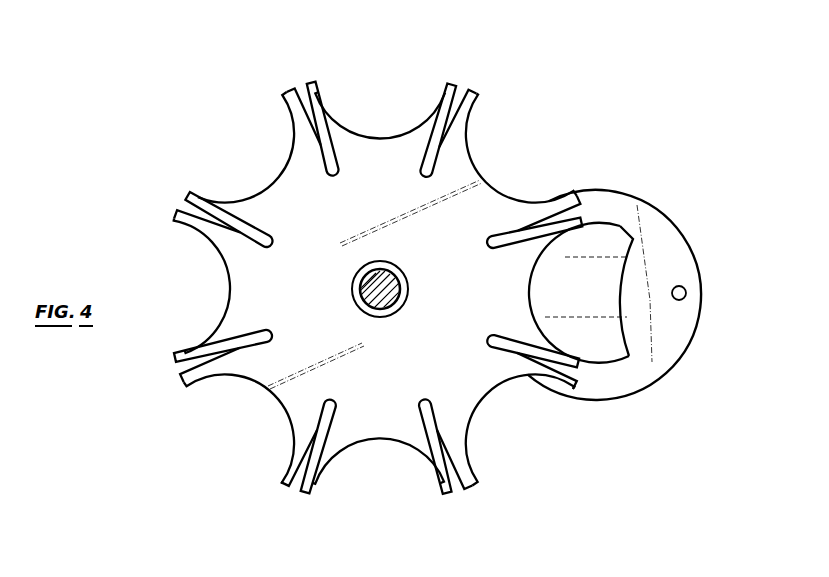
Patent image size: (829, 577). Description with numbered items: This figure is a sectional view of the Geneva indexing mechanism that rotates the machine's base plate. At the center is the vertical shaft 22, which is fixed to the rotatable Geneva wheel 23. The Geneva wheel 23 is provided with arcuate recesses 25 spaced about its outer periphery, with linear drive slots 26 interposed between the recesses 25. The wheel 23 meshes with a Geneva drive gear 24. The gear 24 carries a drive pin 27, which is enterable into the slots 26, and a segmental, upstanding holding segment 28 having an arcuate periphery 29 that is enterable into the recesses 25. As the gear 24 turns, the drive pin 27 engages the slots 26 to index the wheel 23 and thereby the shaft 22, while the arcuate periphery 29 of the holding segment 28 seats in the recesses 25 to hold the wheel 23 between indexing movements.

The vertical shaft 22 is at (372, 282).
The Geneva wheel 23 is at (459, 300).
The Geneva drive gear 24 is at (675, 246).
The arcuate recesses 25 is at (266, 388).
The linear drive slots 26 is at (580, 207).
The drive pin 27 is at (687, 294).
The holding segment 28 is at (589, 302).
The arcuate periphery 29 is at (622, 226).